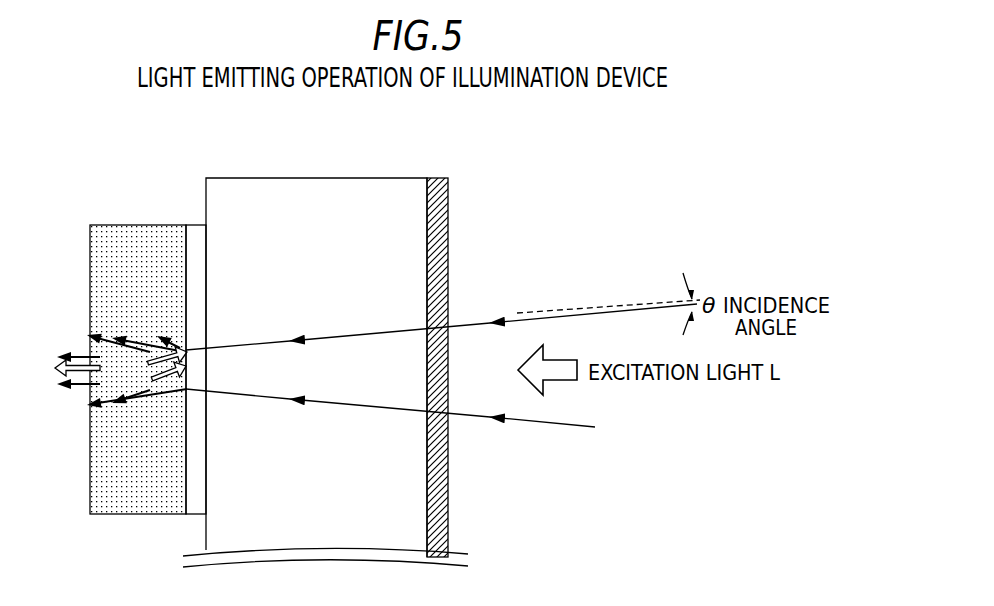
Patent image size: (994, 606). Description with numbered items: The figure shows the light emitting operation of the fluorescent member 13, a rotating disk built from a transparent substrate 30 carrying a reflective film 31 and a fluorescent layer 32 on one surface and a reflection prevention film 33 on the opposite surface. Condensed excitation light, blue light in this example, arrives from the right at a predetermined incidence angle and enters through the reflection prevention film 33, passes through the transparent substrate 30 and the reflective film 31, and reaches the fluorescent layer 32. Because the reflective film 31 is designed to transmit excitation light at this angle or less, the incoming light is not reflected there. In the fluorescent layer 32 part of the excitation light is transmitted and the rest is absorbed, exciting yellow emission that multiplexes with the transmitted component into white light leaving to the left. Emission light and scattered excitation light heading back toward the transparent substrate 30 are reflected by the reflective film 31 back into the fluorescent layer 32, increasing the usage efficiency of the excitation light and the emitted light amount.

The fluorescent member 13 is at (480, 192).
The transparent substrate 30 is at (311, 178).
The reflective film 31 is at (196, 232).
The fluorescent layer 32 is at (128, 238).
The reflection prevention film 33 is at (432, 178).